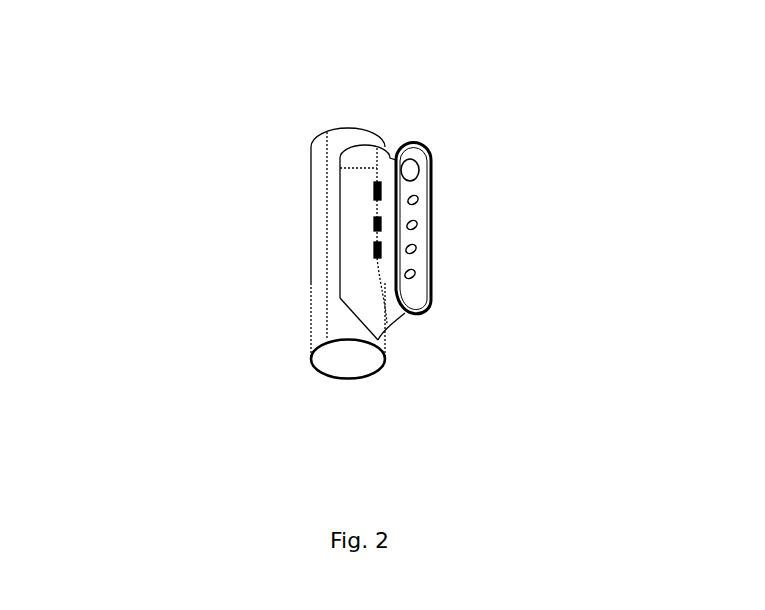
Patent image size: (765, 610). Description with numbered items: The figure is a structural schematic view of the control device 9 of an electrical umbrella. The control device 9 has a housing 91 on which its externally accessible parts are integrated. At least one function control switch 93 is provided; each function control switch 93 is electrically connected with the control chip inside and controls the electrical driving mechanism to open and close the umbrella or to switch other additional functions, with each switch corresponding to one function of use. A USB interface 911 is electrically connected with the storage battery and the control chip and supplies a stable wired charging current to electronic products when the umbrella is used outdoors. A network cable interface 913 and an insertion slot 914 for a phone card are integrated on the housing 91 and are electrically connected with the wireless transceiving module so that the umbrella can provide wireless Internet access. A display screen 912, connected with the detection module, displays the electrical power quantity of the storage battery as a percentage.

The control device 9 is at (293, 241).
The housing 91 is at (387, 325).
The USB interface 911 is at (375, 181).
The display screen 912 is at (418, 162).
The network cable interface 913 is at (375, 218).
The insertion slot 914 is at (373, 252).
The function control switch 93 is at (420, 223).